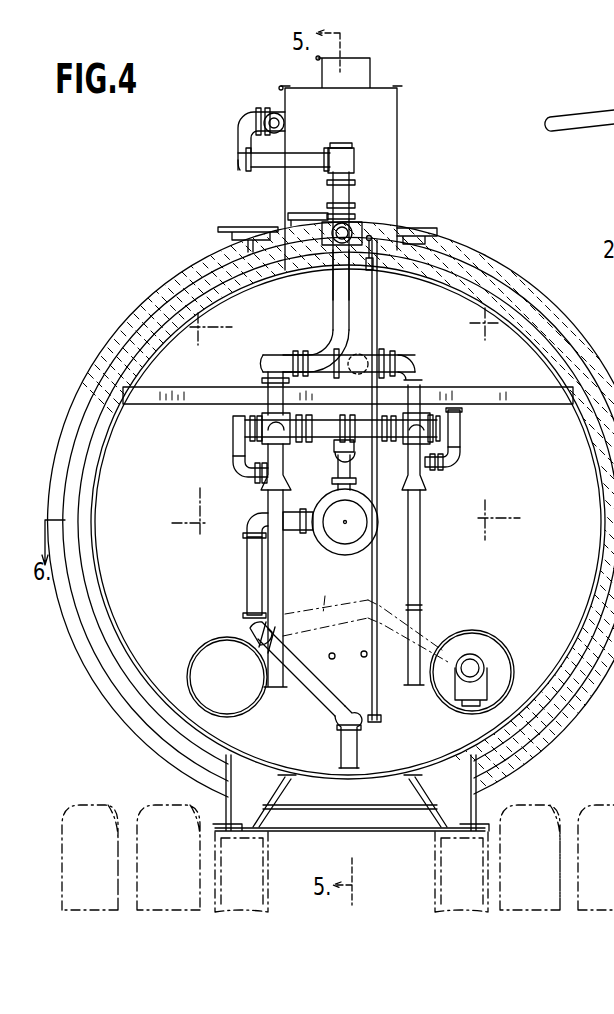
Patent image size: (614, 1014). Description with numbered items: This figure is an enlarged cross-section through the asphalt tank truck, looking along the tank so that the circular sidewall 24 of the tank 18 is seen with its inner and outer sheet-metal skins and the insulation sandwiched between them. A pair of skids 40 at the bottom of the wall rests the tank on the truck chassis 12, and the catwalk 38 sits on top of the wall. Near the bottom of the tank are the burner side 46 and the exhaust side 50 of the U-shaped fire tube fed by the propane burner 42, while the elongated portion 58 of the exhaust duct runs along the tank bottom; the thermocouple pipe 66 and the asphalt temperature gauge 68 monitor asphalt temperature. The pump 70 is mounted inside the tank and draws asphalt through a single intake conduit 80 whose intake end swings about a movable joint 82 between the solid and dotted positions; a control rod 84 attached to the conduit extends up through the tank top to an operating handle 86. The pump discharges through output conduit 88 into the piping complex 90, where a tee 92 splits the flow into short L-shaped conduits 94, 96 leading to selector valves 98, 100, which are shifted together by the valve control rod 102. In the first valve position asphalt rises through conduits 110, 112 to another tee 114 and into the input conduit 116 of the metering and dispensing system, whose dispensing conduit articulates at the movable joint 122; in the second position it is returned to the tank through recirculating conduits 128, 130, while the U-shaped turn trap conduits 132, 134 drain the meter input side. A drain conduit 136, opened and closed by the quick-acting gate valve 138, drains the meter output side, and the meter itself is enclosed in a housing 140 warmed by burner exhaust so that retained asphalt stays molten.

The chassis 12 is at (264, 880).
The tank 18 is at (553, 474).
The cylindrical sidewall 24 is at (545, 325).
The catwalk 38 is at (250, 226).
The skids 40 is at (222, 805).
The propane burner 42 is at (486, 667).
The burner side of fire tube 46 is at (476, 633).
The exhaust side of fire tube 50 is at (196, 640).
The elongated portion of exhaust duct 58 is at (400, 800).
The thermocouple pipe 66 is at (362, 657).
The asphalt temperature gauge 68 is at (328, 660).
The pump 70 is at (336, 556).
The intake conduit 80 is at (310, 615).
The movable joint 82 is at (255, 634).
The control rod 84 is at (385, 585).
The operating handle 86 is at (370, 240).
The output conduit 88 is at (336, 470).
The piping complex 90 is at (252, 373).
The tee 92 is at (340, 452).
The L-shaped conduit 94 is at (290, 445).
The L-shaped conduit 96 is at (400, 445).
The selector valve 98 is at (262, 448).
The selector valve 100 is at (462, 440).
The valve control rod 102 is at (378, 330).
The conduit 110 is at (262, 380).
The conduit 112 is at (420, 378).
The tee 114 is at (320, 350).
The input conduit 116 is at (332, 310).
The movable joint 122 is at (242, 118).
The recirculating conduit 128 is at (270, 578).
The recirculating conduit 130 is at (420, 612).
The turn trap conduit 132 is at (232, 425).
The turn trap conduit 134 is at (462, 415).
The drain conduit 136 is at (332, 280).
The gate valve 138 is at (330, 240).
The housing 140 is at (398, 115).